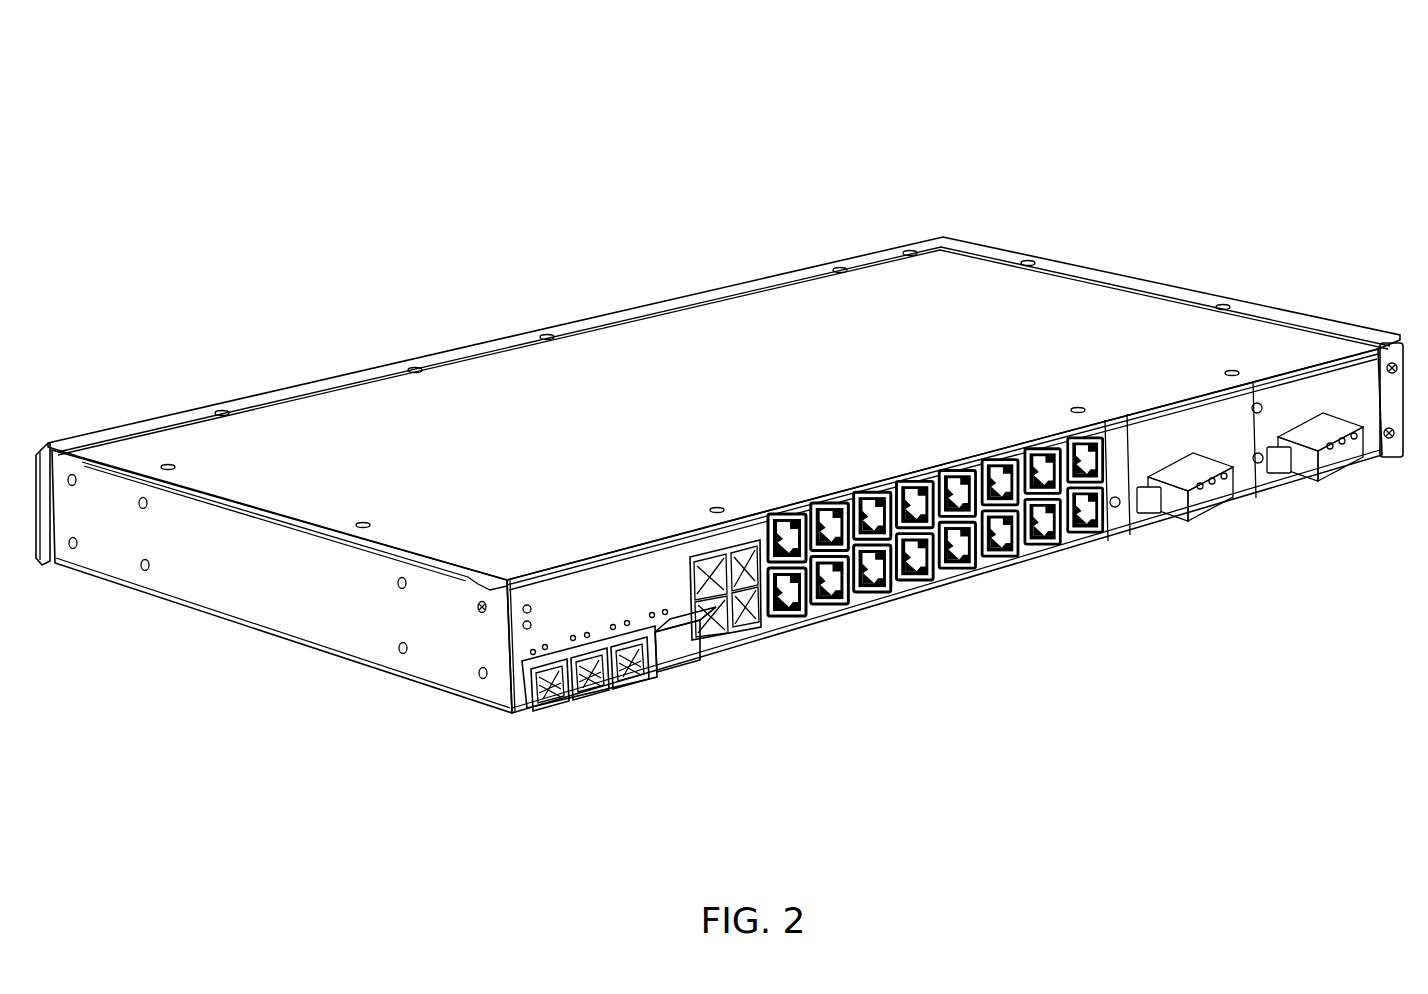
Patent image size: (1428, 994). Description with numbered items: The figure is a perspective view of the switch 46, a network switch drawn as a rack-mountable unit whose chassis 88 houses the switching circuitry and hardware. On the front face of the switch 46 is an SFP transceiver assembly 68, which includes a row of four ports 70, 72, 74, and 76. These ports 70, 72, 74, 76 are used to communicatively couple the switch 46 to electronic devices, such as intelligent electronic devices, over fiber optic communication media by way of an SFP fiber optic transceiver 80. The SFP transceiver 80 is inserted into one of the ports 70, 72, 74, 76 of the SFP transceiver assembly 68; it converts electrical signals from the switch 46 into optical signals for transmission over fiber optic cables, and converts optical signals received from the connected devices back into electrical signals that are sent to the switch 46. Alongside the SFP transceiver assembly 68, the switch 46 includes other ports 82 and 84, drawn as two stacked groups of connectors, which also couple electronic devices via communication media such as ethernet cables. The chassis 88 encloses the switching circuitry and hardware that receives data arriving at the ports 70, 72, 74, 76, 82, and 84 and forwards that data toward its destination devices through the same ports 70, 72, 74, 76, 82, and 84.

The switch 46 is at (1088, 70).
The SFP transceiver assembly 68 is at (578, 597).
The port 70 is at (548, 690).
The port 72 is at (592, 683).
The port 74 is at (642, 668).
The port 76 is at (680, 667).
The SFP fiber optic transceiver 80 is at (680, 640).
The other ports 82 is at (703, 556).
The other ports 84 is at (793, 513).
The chassis 88 is at (486, 398).